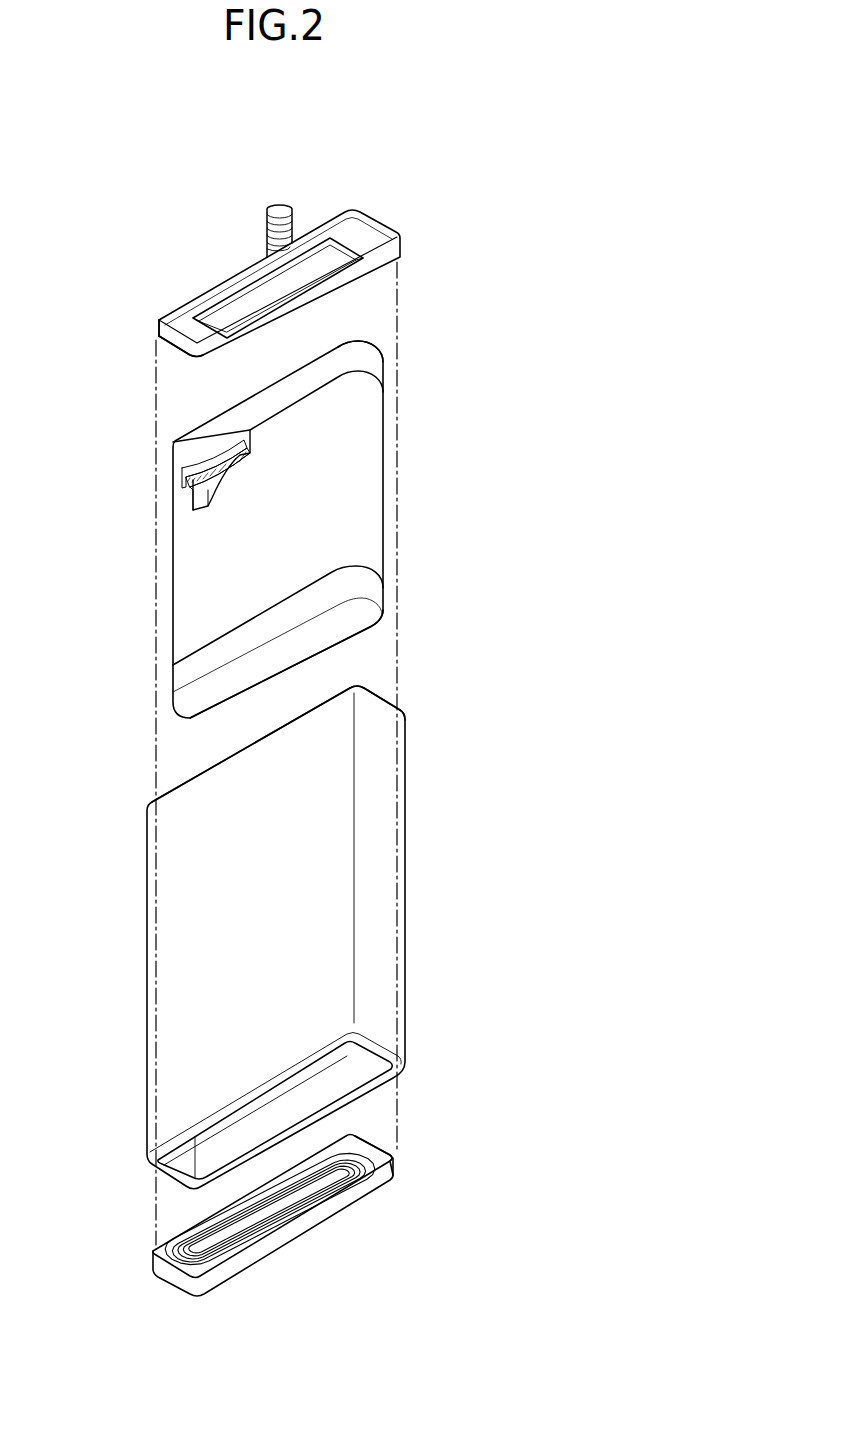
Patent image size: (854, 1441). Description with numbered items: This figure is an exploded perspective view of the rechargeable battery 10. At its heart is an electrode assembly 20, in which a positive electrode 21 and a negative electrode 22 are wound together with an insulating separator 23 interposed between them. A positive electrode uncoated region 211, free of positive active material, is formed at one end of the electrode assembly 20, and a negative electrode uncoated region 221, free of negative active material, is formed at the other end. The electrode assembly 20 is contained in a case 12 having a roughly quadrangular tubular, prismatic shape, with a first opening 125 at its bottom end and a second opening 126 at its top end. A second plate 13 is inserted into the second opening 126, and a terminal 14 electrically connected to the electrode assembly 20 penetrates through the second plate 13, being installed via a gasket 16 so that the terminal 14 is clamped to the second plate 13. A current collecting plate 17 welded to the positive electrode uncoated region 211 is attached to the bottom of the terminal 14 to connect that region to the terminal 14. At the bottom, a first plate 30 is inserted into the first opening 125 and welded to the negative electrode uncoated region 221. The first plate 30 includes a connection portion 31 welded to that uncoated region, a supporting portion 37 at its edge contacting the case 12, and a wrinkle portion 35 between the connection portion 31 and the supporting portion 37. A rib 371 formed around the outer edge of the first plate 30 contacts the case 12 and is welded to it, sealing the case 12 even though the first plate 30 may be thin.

The rechargeable battery 10 is at (466, 221).
The case 12 is at (390, 870).
The second plate 13 is at (380, 227).
The terminal 14 is at (263, 213).
The gasket 16 is at (180, 312).
The current collecting plate 17 is at (333, 270).
The electrode assembly 20 is at (392, 471).
The positive electrode 21 is at (210, 500).
The negative electrode 22 is at (192, 498).
The insulating separator 23 is at (180, 487).
The positive electrode uncoated region 211 is at (373, 363).
The negative electrode uncoated region 221 is at (370, 588).
The first opening 125 is at (366, 1062).
The second opening 126 is at (378, 697).
The first plate 30 is at (138, 1248).
The connection portion 31 is at (330, 1173).
The wrinkle portion 35 is at (283, 1220).
The supporting portion 37 is at (192, 1271).
The rib 371 is at (395, 1162).